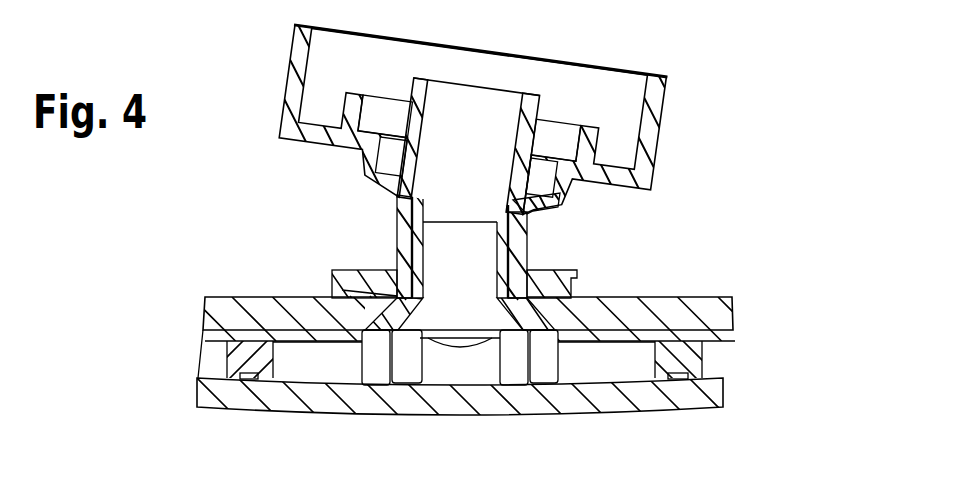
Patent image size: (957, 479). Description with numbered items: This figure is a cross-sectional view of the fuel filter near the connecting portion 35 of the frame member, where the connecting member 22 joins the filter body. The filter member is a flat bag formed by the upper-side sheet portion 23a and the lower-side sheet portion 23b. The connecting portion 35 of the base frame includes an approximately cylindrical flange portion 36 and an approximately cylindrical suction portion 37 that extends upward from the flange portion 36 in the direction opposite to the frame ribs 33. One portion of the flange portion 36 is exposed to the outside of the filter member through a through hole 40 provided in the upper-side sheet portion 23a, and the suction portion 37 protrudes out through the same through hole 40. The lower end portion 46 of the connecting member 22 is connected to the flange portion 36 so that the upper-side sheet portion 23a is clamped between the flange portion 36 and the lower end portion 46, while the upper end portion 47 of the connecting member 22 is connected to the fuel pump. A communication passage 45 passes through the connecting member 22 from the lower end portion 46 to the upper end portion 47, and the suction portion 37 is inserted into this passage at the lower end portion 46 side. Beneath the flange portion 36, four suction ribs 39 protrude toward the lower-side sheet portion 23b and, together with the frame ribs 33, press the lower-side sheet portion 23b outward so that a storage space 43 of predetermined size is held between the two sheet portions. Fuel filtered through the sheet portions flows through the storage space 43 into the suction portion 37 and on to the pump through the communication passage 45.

The connecting member 22 is at (467, 154).
The communication passage 45 is at (427, 110).
The connecting portion 35 is at (443, 255).
The suction portion 37 is at (413, 228).
The flange portion 36 is at (367, 288).
The upper end portion 47 is at (600, 193).
The lower end portion 46 is at (551, 260).
The through hole 40 is at (585, 313).
The upper-side sheet portion 23a is at (732, 302).
The lower-side sheet portion 23b is at (725, 396).
The storage space 43 is at (333, 376).
The suction ribs 39 is at (395, 384).
The frame ribs 33 is at (250, 368).